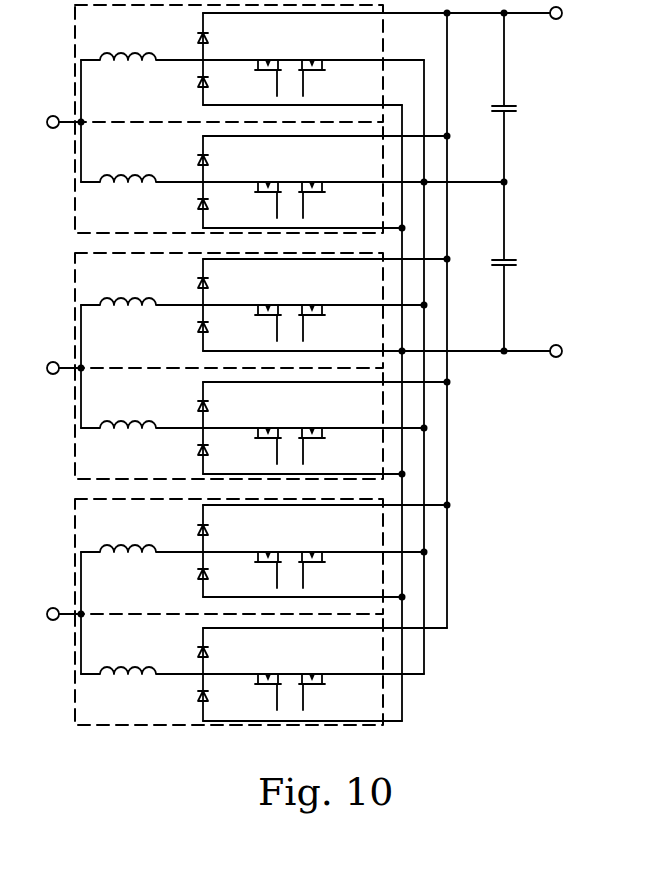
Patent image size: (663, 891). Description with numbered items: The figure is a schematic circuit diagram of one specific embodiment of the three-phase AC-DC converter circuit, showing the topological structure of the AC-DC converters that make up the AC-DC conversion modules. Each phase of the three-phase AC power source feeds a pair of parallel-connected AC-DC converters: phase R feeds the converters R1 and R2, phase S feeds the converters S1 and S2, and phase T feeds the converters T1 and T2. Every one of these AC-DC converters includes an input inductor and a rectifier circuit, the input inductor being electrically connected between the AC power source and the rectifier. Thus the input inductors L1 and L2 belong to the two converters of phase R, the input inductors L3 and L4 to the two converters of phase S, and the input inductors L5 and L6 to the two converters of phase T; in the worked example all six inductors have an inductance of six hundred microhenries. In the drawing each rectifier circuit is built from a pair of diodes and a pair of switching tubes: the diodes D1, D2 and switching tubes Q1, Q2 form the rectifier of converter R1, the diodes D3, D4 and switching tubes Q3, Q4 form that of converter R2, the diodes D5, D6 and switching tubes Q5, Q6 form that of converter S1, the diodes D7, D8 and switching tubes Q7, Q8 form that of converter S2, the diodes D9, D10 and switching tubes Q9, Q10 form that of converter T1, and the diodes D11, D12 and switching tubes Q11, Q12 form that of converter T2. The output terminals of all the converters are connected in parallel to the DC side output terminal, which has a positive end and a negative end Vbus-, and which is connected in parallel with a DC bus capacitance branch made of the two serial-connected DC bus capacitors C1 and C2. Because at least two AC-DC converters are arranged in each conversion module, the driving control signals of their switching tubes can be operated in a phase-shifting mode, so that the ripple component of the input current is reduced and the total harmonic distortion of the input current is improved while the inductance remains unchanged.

The AC-DC converter R1 is at (229, 63).
The AC-DC converter R2 is at (229, 178).
The AC-DC converter S1 is at (229, 310).
The AC-DC converter S2 is at (229, 424).
The AC-DC converter T1 is at (229, 556).
The AC-DC converter T2 is at (229, 670).
The phase R is at (56, 121).
The phase S is at (56, 366).
The phase T is at (55, 613).
The input inductor L1 is at (142, 47).
The input inductor L2 is at (142, 169).
The input inductor L3 is at (142, 292).
The input inductor L4 is at (142, 415).
The input inductor L5 is at (142, 539).
The input inductor L6 is at (142, 661).
The diode D1 is at (190, 36).
The diode D2 is at (190, 82).
The diode D3 is at (190, 159).
The diode D4 is at (190, 205).
The diode D5 is at (190, 282).
The diode D6 is at (190, 328).
The diode D7 is at (190, 405).
The diode D8 is at (190, 451).
The diode D9 is at (190, 528).
The diode D10 is at (185, 574).
The diode D11 is at (185, 651).
The diode D12 is at (185, 697).
The switching transistor Q1 is at (268, 68).
The switching transistor Q2 is at (312, 68).
The switching transistor Q3 is at (268, 190).
The switching transistor Q4 is at (312, 190).
The switching transistor Q5 is at (268, 313).
The switching transistor Q6 is at (312, 313).
The switching transistor Q7 is at (268, 436).
The switching transistor Q8 is at (312, 436).
The switching transistor Q9 is at (268, 560).
The switching transistor Q10 is at (312, 560).
The switching transistor Q11 is at (268, 682).
The switching transistor Q12 is at (312, 682).
The DC bus capacitor C1 is at (491, 97).
The DC bus capacitor C2 is at (491, 266).
The negative DC bus terminal Vbus- is at (582, 352).